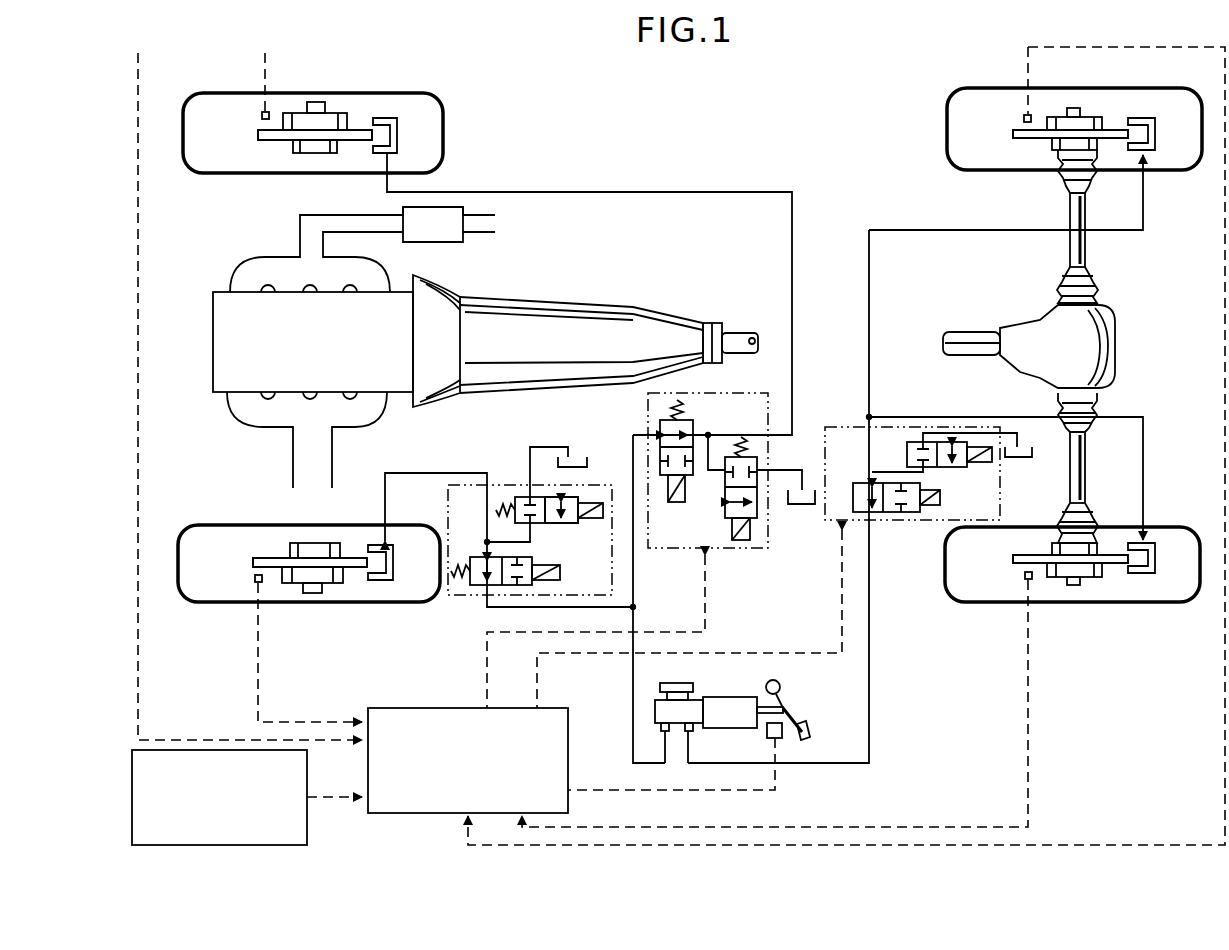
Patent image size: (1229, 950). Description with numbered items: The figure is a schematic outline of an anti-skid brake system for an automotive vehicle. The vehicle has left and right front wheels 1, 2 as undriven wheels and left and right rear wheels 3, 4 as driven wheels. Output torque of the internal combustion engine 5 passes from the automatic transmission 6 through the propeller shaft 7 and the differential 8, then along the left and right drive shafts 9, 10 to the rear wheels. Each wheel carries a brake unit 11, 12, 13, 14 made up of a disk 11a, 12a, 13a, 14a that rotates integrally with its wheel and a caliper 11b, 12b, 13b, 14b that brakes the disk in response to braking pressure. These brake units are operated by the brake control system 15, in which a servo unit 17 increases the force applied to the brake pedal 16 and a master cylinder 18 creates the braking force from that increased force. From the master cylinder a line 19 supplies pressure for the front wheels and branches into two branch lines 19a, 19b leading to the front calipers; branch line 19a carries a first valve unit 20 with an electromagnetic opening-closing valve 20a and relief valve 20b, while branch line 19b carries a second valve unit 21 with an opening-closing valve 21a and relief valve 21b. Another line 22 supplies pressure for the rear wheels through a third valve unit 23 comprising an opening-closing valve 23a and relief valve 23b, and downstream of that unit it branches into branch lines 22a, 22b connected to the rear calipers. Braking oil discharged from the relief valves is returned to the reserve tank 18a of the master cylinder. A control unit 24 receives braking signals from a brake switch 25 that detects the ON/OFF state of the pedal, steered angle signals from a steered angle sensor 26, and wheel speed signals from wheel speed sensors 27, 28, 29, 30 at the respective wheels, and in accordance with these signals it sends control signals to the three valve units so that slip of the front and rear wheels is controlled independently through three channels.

The left front wheel 1 is at (204, 601).
The right front wheel 2 is at (443, 113).
The left rear wheel 3 is at (968, 603).
The right rear wheel 4 is at (1122, 88).
The internal combustion engine 5 is at (213, 300).
The automatic transmission 6 is at (555, 325).
The propeller shaft 7 is at (962, 330).
The differential 8 is at (1092, 348).
The left drive shaft 9 is at (1086, 458).
The right drive shaft 10 is at (1069, 247).
The brake unit 11 is at (350, 541).
The disk 11a is at (355, 568).
The caliper 11b is at (385, 581).
The brake unit 12 is at (360, 110).
The disk 12a is at (356, 142).
The caliper 12b is at (389, 117).
The brake unit 13 is at (1115, 580).
The disk 13a is at (1097, 571).
The caliper 13b is at (1150, 575).
The brake unit 14 is at (1118, 147).
The disk 14a is at (1032, 139).
The caliper 14b is at (1156, 133).
The brake control system 15 is at (888, 653).
The brake pedal 16 is at (795, 722).
The servo unit 17 is at (718, 705).
The master cylinder 18 is at (651, 697).
The reserve tank 18a is at (652, 680).
The line 19 is at (632, 715).
The branch line 19a is at (425, 472).
The branch line 19b is at (600, 191).
The first valve unit 20 is at (505, 476).
The opening-closing valve 20a is at (533, 548).
The relief valve 20b is at (575, 496).
The second valve unit 21 is at (722, 556).
The opening-closing valve 21a is at (697, 423).
The relief valve 21b is at (731, 505).
The line 22 is at (880, 590).
The branch line 22a is at (1046, 478).
The branch line 22b is at (1143, 226).
The third valve unit 23 is at (922, 529).
The opening-closing valve 23a is at (940, 498).
The relief valve 23b is at (963, 463).
The control unit 24 is at (366, 809).
The brake switch 25 is at (781, 738).
The steered angle sensor 26 is at (310, 775).
The wheel speed sensor 27 is at (260, 583).
The wheel speed sensor 28 is at (261, 117).
The wheel speed sensor 29 is at (1027, 580).
The wheel speed sensor 30 is at (1023, 119).